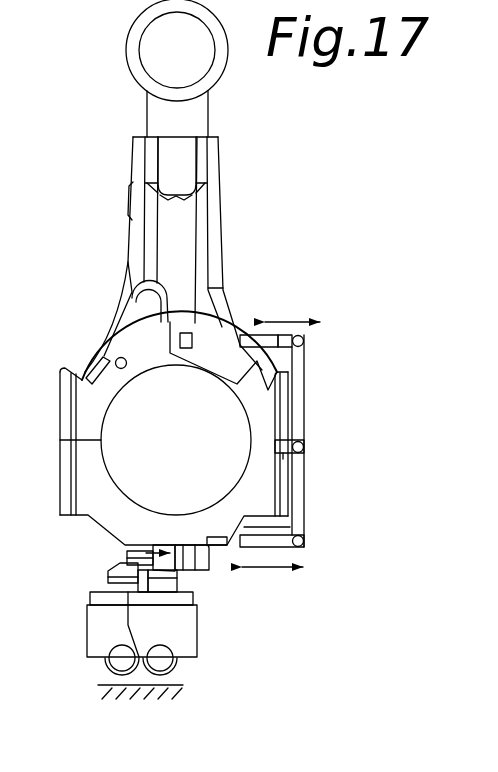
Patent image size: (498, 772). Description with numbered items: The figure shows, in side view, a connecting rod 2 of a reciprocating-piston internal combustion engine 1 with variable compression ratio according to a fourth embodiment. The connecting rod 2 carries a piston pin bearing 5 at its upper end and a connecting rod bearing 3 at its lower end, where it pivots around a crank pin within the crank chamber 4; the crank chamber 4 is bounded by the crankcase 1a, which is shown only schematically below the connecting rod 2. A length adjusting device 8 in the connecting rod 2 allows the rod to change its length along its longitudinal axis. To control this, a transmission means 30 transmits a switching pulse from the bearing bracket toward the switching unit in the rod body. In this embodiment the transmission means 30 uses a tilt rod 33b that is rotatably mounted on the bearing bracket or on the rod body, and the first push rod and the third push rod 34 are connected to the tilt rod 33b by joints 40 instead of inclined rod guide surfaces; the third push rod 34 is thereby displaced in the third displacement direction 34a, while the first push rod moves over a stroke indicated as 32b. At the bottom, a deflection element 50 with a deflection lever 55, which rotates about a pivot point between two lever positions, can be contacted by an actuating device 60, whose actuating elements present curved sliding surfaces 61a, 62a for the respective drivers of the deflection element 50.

The internal combustion engine 1 is at (259, 221).
The crankcase 1a is at (125, 693).
The connecting rod 2 is at (123, 265).
The connecting rod bearing 3 is at (119, 388).
The crank chamber 4 is at (348, 491).
The piston pin bearing 5 is at (186, 52).
The length adjusting device 8 is at (215, 135).
The transmission means 30 is at (335, 434).
The lower clamp distance 32b is at (290, 570).
The tilt rod 33b is at (305, 418).
The third push rod 34 is at (265, 340).
The third displacement direction 34a is at (297, 318).
The joints 40 is at (304, 341).
The deflection element 50 is at (125, 551).
The deflection lever 55 is at (188, 551).
The actuating device 60 is at (186, 646).
The curved sliding surface 61a is at (172, 575).
The curved sliding surface 62a is at (110, 578).